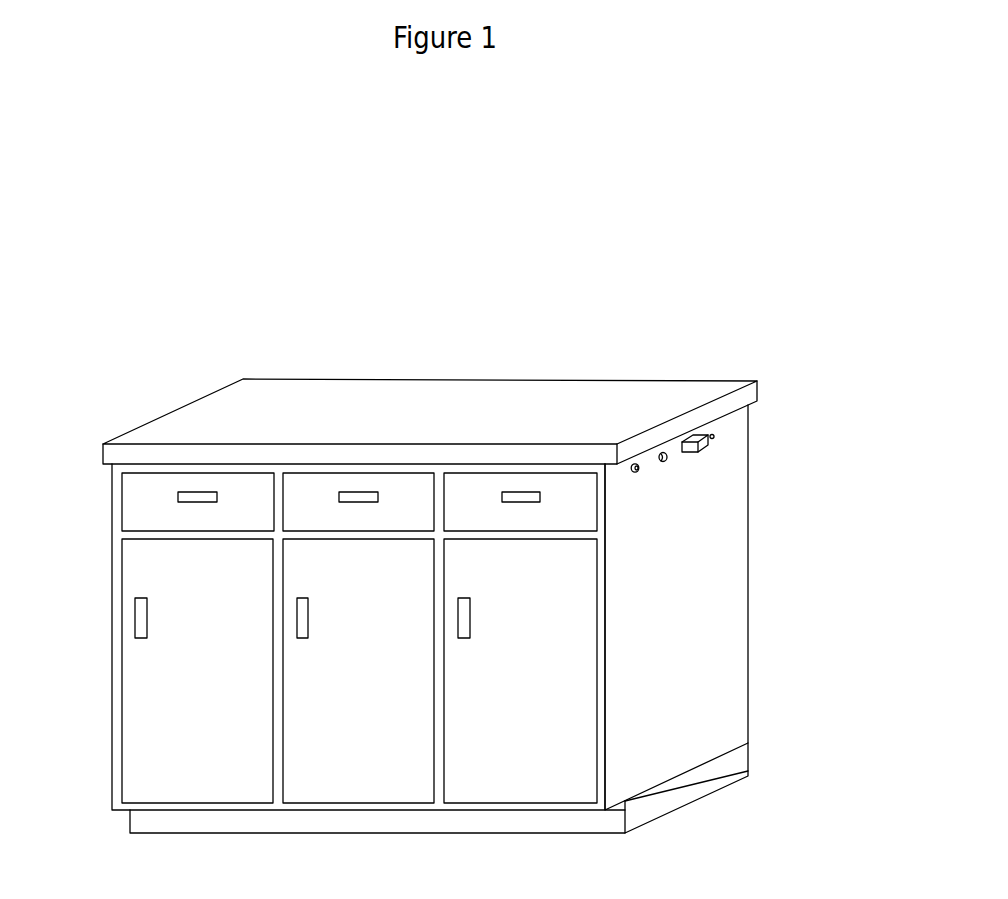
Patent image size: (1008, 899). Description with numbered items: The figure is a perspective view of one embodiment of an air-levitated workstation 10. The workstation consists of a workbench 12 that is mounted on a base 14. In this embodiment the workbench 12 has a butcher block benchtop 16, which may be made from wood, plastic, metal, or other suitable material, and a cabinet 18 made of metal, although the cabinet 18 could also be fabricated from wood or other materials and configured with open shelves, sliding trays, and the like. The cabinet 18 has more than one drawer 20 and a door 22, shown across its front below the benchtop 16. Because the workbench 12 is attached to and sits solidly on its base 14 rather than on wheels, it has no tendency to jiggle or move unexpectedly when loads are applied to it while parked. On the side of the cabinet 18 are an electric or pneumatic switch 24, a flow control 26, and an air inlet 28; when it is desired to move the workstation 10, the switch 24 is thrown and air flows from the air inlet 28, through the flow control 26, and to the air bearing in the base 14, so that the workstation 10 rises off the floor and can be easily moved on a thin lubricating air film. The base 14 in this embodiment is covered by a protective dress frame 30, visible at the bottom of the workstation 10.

The air-levitated workstation 10 is at (765, 382).
The workbench 12 is at (828, 382).
The base 14 is at (753, 770).
The butcher block benchtop 16 is at (433, 392).
The cabinet 18 is at (95, 463).
The drawer 20 is at (155, 488).
The door 22 is at (155, 773).
The switch 24 is at (638, 473).
The flow control 26 is at (665, 462).
The air inlet 28 is at (709, 441).
The protective dress frame 30 is at (370, 830).